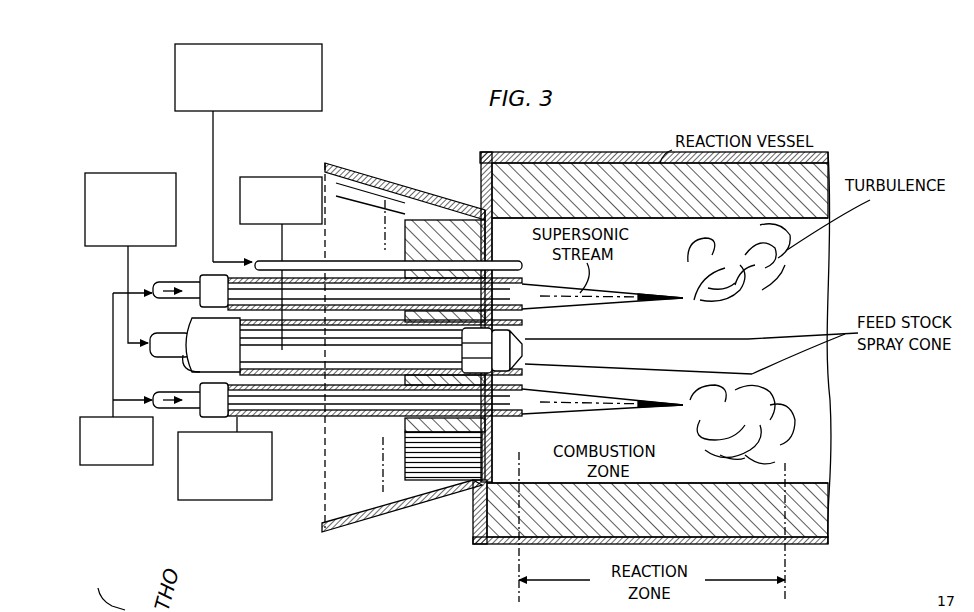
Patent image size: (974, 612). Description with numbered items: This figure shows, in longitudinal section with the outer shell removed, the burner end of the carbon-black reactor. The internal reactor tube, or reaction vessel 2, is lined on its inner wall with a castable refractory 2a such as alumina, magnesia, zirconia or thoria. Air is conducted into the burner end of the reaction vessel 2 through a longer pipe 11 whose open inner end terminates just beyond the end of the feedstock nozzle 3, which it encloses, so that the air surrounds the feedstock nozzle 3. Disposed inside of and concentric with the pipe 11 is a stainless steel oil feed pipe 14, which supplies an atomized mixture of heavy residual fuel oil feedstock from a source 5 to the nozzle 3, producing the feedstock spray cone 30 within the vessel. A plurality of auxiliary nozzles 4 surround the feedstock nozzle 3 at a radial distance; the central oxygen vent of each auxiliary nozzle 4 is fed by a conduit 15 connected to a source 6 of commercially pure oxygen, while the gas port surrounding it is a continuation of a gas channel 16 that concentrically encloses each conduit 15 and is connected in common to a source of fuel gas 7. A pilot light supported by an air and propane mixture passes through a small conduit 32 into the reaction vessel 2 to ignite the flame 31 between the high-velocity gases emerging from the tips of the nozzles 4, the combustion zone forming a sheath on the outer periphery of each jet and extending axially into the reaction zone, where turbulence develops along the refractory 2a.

The reaction vessel 2 is at (581, 158).
The castable refractory 2a is at (708, 219).
The feedstock nozzle 3 is at (522, 347).
The auxiliary nozzles 4 is at (385, 208).
The feedstock source 5 is at (131, 172).
The oxygen source 6 is at (104, 470).
The fuel gas source 7 is at (222, 500).
The air pipe 11 is at (520, 322).
The oil feed pipe 14 is at (170, 336).
The oxygen conduit 15 is at (169, 284).
The gas channel 16 is at (313, 277).
The feed stock spray cone 30 is at (752, 339).
The flame 31 is at (656, 293).
The pilot light conduit 32 is at (343, 269).